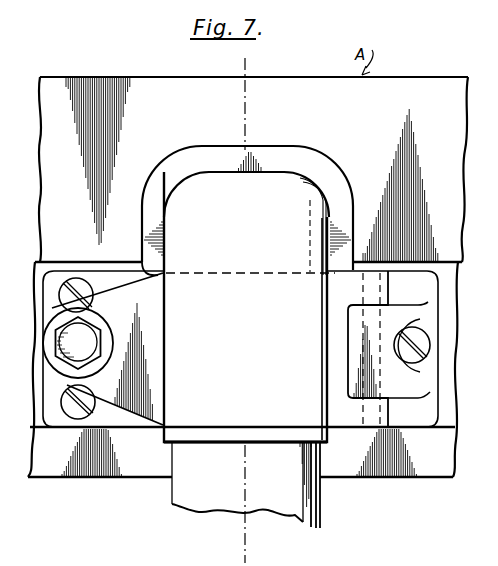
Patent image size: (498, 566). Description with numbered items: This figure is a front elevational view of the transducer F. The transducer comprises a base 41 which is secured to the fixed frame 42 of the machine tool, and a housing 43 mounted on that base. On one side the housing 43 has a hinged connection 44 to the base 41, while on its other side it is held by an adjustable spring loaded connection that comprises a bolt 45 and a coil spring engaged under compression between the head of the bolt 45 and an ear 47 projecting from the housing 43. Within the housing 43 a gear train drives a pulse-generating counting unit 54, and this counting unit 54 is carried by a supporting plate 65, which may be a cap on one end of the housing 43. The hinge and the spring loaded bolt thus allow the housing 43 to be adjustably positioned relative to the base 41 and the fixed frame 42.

The base 41 is at (420, 426).
The fixed frame 42 is at (143, 474).
The housing 43 is at (330, 204).
The hinged connection 44 is at (382, 291).
The bolt 45 is at (92, 337).
The ear 47 is at (114, 301).
The pulse-generating counting unit 54 is at (298, 504).
The supporting plate 65 is at (286, 432).